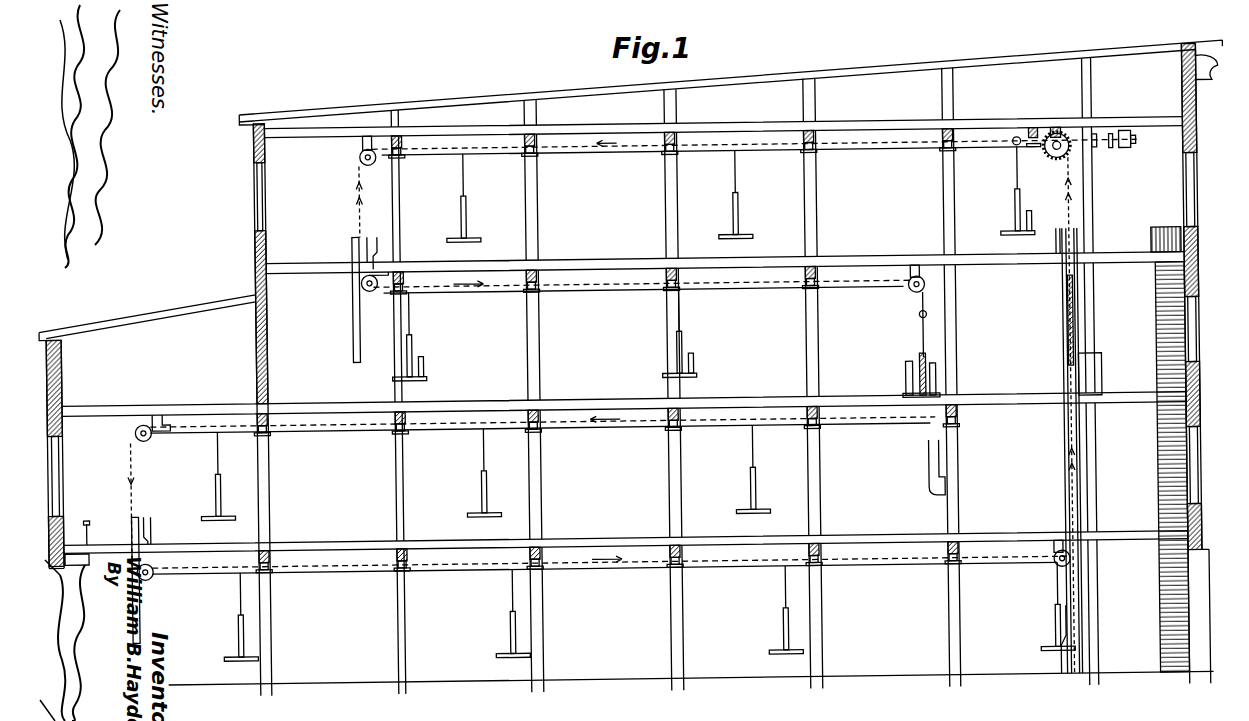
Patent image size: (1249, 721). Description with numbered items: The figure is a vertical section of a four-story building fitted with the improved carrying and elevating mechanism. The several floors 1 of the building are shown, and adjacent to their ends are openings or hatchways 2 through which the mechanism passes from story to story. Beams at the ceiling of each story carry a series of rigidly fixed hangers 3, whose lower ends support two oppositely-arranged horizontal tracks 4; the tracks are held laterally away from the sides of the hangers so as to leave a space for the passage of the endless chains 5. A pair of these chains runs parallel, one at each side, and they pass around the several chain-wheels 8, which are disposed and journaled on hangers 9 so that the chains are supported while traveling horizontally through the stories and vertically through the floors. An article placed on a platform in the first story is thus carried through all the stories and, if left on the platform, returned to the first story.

The floors 1 is at (624, 395).
The openings or hatchways 2 is at (150, 557).
The hangers 3 is at (403, 420).
The horizontal tracks 4 is at (436, 428).
The endless chains 5 is at (142, 505).
The chain-wheels 8 is at (140, 428).
The hangers 9 is at (162, 416).